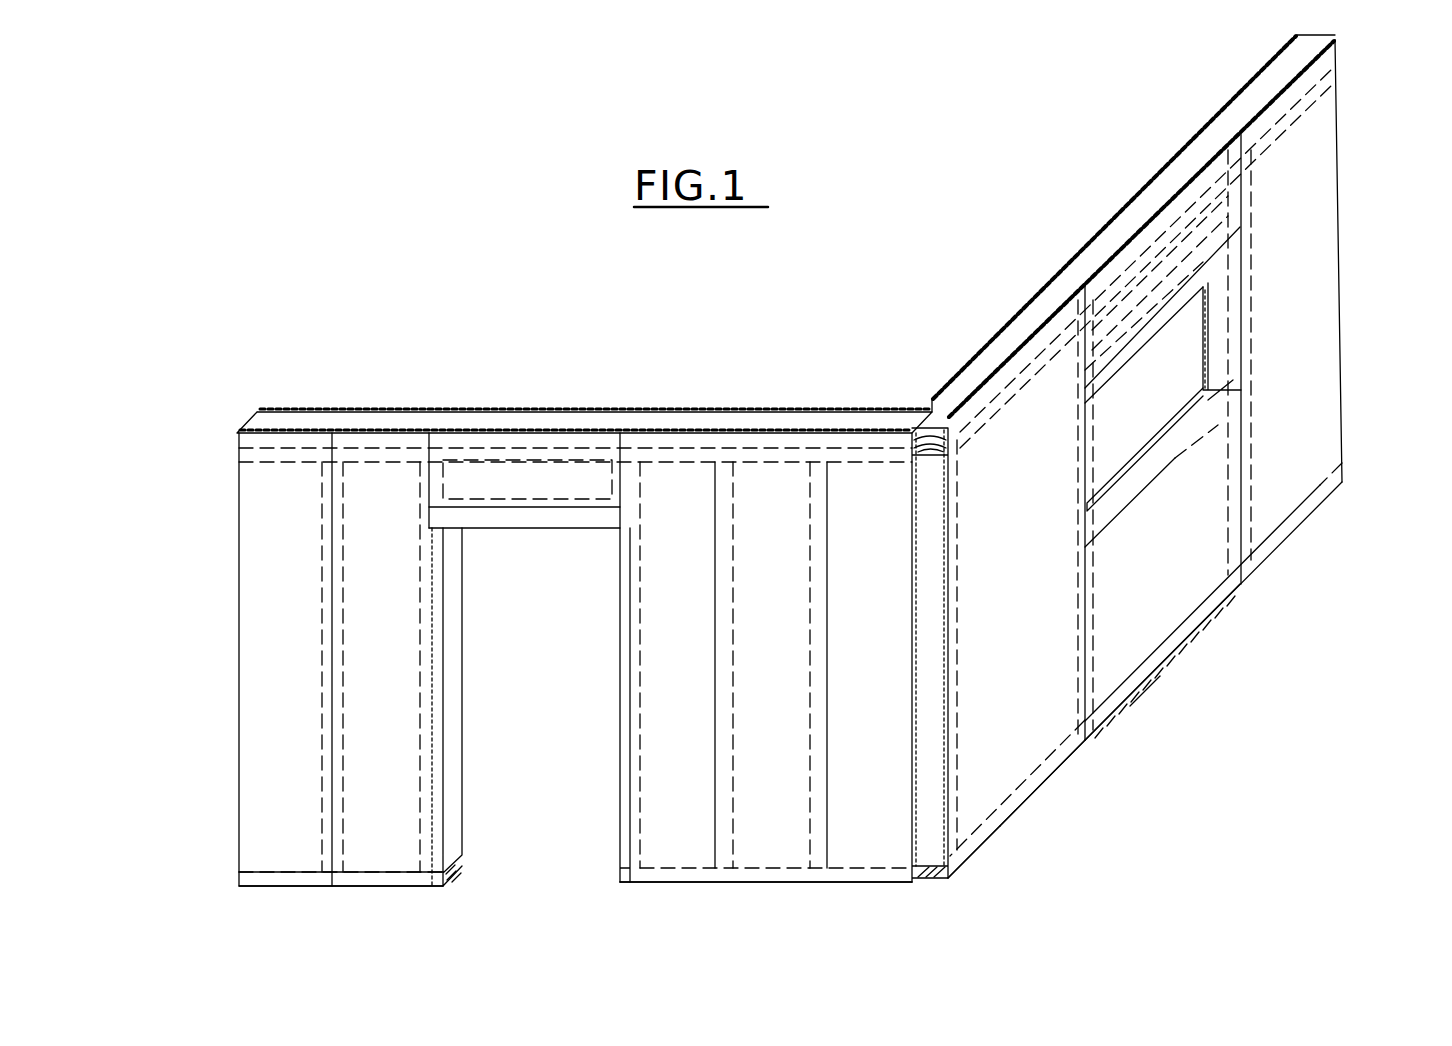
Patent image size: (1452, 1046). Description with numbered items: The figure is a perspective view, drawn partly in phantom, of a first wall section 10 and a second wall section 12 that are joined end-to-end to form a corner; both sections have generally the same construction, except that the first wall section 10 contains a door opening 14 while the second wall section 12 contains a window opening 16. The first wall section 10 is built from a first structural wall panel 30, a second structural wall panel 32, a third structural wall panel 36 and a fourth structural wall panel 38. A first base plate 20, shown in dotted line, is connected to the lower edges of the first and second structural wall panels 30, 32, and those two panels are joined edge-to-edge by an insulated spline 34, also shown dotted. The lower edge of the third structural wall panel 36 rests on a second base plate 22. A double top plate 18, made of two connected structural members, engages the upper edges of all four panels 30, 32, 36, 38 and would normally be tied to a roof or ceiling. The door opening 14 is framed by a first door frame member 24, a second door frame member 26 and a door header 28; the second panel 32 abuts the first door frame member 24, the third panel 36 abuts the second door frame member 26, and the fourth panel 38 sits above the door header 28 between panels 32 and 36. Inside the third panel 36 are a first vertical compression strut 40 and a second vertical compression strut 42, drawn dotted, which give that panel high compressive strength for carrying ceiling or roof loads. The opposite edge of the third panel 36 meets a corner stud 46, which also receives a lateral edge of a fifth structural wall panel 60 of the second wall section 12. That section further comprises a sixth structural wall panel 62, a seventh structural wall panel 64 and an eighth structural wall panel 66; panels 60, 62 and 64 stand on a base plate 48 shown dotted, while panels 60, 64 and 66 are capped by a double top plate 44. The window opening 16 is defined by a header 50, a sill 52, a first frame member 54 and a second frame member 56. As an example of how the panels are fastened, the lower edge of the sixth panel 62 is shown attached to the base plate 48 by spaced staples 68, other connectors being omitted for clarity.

The first wall section 10 is at (527, 398).
The second wall section 12 is at (1150, 160).
The door opening 14 is at (520, 868).
The window opening 16 is at (1118, 430).
The double top plate 18 is at (233, 447).
The first base plate 20 is at (262, 872).
The second base plate 22 is at (697, 868).
The first door frame member 24 is at (454, 617).
The second door frame member 26 is at (629, 640).
The door header 28 is at (563, 520).
The first structural wall panel 30 is at (300, 659).
The second structural wall panel 32 is at (393, 667).
The insulated spline 34 is at (320, 705).
The third structural wall panel 36 is at (780, 665).
The fourth structural wall panel 38 is at (527, 479).
The first vertical compression strut 40 is at (713, 520).
The second vertical compression strut 42 is at (827, 520).
The double top plate 44 is at (1043, 310).
The corner stud 46 is at (928, 835).
The base plate 48 is at (1012, 792).
The header 50 is at (1138, 334).
The sill 52 is at (1118, 430).
The first frame member 54 is at (1080, 438).
The second frame member 56 is at (1213, 322).
The fifth structural wall panel 60 is at (1047, 512).
The sixth structural wall panel 62 is at (1202, 612).
The seventh structural wall panel 64 is at (1265, 358).
The eighth structural wall panel 66 is at (1162, 299).
The staples 68 is at (1143, 670).